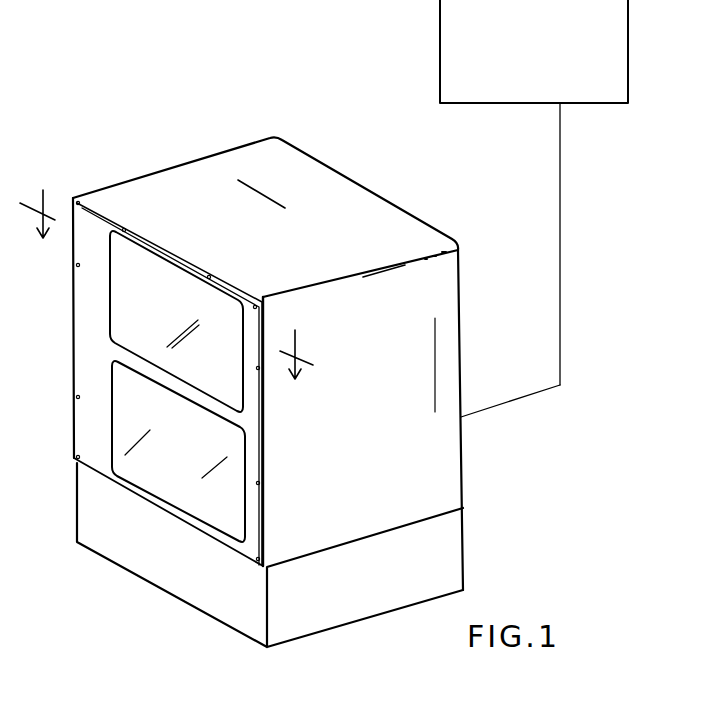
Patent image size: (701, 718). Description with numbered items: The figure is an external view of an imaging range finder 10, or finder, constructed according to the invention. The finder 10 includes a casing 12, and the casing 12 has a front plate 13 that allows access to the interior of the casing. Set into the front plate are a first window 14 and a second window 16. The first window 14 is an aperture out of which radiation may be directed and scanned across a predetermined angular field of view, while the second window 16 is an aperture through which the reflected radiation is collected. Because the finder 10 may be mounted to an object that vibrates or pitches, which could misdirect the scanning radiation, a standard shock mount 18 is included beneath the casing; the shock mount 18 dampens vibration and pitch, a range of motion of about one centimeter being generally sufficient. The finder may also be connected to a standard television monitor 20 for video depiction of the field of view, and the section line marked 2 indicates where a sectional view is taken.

The imaging range finder 10 is at (190, 80).
The casing 12 is at (343, 181).
The front plate 13 is at (255, 425).
The first window 14 is at (112, 333).
The second window 16 is at (112, 428).
The shock mount 18 is at (315, 627).
The television monitor 20 is at (605, 97).
The section line 2- 2 is at (166, 279).